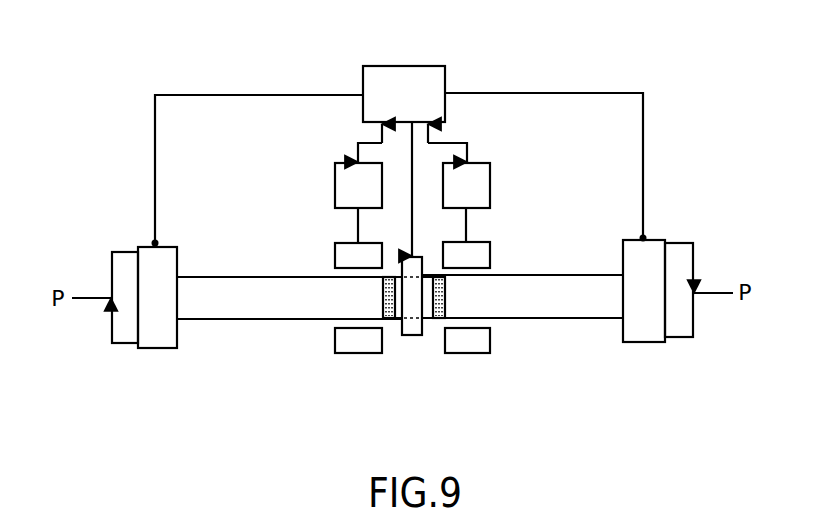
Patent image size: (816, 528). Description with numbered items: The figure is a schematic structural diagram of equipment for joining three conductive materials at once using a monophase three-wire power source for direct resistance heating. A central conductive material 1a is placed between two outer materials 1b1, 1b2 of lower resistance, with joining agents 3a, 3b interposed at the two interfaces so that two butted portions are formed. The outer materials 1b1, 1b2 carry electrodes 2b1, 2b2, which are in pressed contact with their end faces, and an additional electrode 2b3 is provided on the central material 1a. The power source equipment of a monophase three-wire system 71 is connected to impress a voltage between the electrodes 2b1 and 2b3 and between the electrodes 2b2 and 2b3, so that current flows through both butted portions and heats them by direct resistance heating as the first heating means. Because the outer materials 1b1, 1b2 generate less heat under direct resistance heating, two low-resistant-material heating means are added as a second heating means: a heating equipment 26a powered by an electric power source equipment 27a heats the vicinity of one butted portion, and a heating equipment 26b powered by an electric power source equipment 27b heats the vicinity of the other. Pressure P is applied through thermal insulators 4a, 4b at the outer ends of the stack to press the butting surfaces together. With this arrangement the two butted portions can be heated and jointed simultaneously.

The power source equipment of a monophase three-wire system 71 is at (398, 73).
The electric power source equipment 27a is at (337, 180).
The electric power source equipment 27b is at (482, 182).
The heating equipment 26a is at (355, 333).
The heating equipment 26b is at (466, 333).
The conductive material to be jointed 1a is at (430, 283).
The material to be jointed 1b1 is at (217, 287).
The material to be jointed 1b2 is at (583, 282).
The electrode 2b1 is at (155, 342).
The electrode 2b2 is at (642, 333).
The electrode 2b3 is at (412, 330).
The joining agent 3a is at (393, 322).
The joining agent 3b is at (437, 322).
The thermal insulator 4a is at (125, 262).
The thermal insulator 4b is at (682, 262).